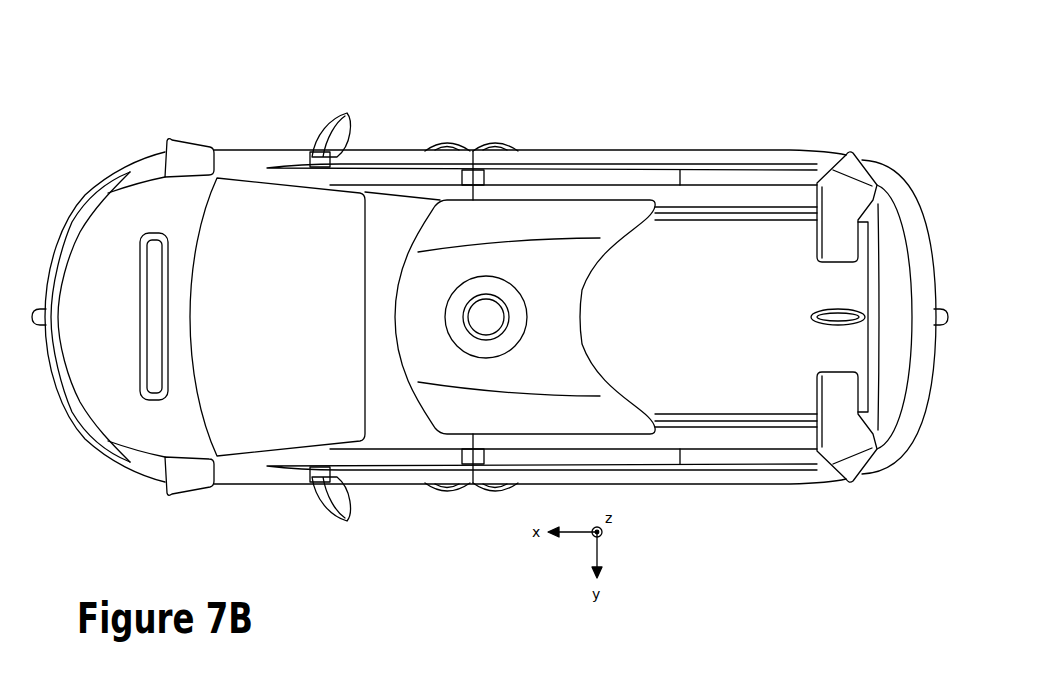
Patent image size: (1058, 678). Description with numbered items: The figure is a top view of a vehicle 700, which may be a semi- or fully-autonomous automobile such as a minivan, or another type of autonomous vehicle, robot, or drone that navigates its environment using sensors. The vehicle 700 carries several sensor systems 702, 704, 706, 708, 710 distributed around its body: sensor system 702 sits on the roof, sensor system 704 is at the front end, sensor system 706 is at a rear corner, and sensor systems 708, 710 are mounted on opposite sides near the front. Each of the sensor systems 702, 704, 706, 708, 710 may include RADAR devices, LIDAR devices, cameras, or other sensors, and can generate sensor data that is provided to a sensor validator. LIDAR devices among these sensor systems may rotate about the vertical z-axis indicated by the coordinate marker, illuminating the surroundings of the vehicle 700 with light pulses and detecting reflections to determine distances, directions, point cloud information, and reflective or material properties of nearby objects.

The vehicle 700 is at (840, 70).
The sensor system 702 is at (497, 276).
The sensor system 704 is at (37, 312).
The sensor system 706 is at (940, 312).
The sensor system 708 is at (168, 142).
The sensor system 710 is at (173, 492).